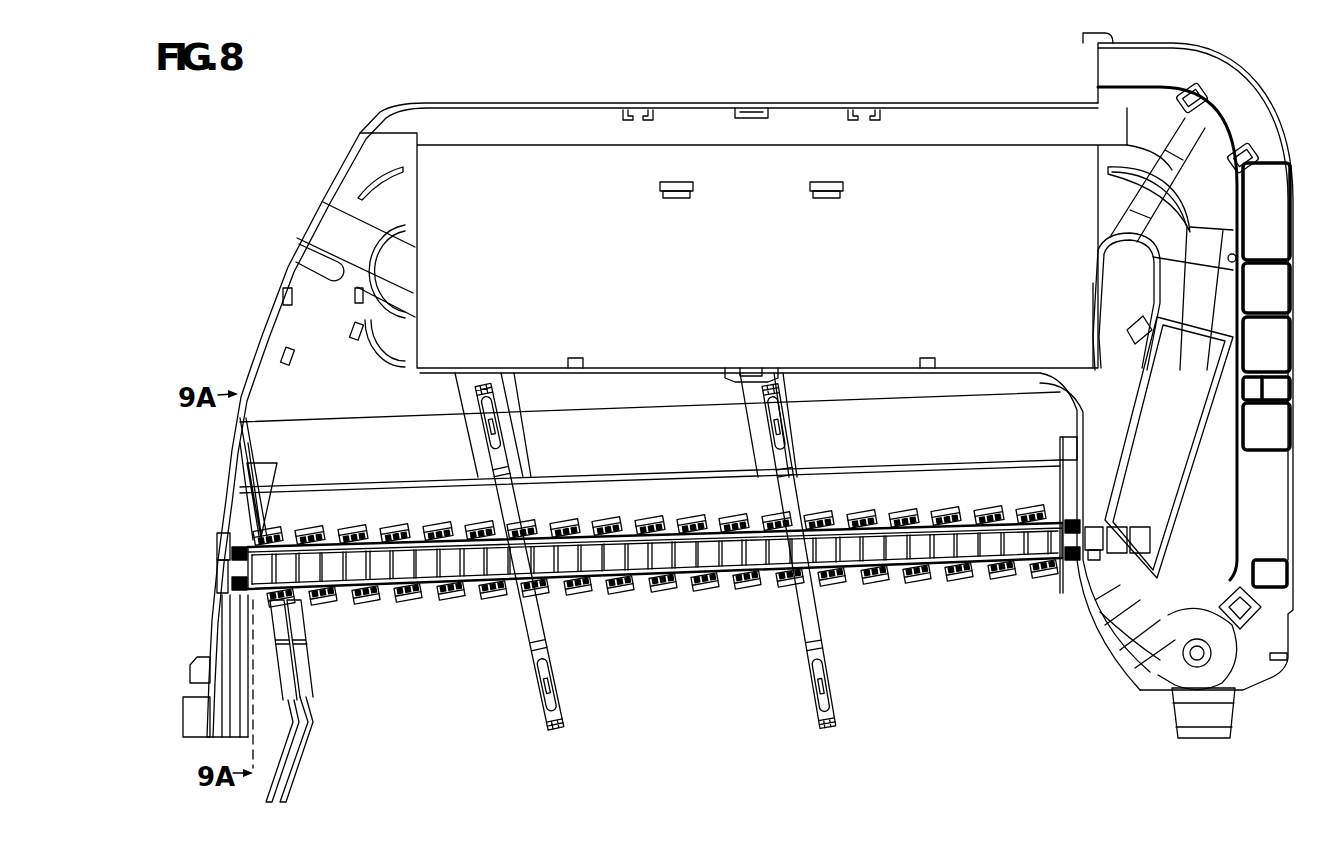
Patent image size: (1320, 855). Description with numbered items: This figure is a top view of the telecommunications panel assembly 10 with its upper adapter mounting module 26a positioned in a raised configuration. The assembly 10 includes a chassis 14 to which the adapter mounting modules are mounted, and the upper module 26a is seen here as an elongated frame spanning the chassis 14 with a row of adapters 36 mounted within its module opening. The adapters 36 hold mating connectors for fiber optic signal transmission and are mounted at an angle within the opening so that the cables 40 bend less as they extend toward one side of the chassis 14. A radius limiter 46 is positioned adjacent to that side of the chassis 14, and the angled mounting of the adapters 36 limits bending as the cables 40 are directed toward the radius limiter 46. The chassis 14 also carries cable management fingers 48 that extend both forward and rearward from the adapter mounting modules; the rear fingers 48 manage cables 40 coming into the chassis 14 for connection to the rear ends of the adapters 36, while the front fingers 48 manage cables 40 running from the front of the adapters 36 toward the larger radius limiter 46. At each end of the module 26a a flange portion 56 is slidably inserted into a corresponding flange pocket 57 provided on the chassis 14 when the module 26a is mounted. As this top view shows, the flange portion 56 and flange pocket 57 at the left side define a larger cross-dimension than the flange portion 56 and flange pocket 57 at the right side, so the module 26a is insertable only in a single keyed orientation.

The telecommunications panel assembly 10 is at (710, 719).
The chassis 14 is at (513, 107).
The upper module 26a is at (640, 557).
The adapters 36 is at (676, 594).
The cables 40 is at (300, 757).
The radius limiter 46 is at (1227, 716).
The cable management fingers 48 is at (835, 716).
The flange portion 56 is at (222, 558).
The flange pocket 57 is at (218, 588).